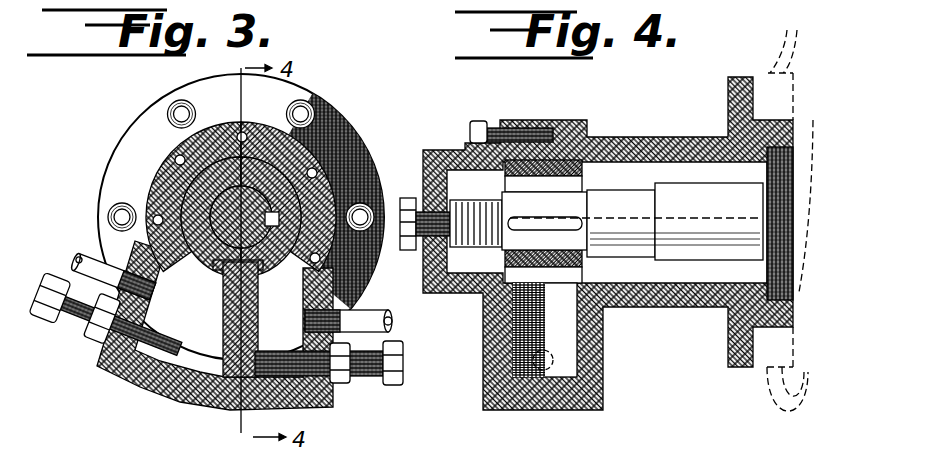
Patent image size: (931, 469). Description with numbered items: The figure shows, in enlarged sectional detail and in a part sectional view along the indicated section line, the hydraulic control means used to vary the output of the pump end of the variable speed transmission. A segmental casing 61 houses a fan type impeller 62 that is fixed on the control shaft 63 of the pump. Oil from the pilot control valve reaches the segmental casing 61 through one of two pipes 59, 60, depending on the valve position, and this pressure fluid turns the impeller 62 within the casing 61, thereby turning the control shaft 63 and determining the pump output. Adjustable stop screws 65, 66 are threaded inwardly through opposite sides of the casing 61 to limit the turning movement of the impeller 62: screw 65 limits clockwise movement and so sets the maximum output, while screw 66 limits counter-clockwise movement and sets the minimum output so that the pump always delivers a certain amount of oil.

In FIG. 3, the pipe 59 is at (80, 262).
In FIG. 3, the pipe 60 is at (390, 318).
In FIG. 3, the segmental casing 61 is at (158, 390).
In FIG. 4, the segmental casing 61 is at (604, 390).
In FIG. 3, the fan type impeller 62 is at (233, 325).
In FIG. 4, the fan type impeller 62 is at (545, 330).
In FIG. 3, the control shaft 63 is at (230, 207).
In FIG. 4, the control shaft 63 is at (581, 221).
In FIG. 3, the adjustable stop screw 65 is at (78, 325).
In FIG. 3, the adjustable stop screw 66 is at (368, 370).
In FIG. 4, the adjustable stop screw 66 is at (533, 372).